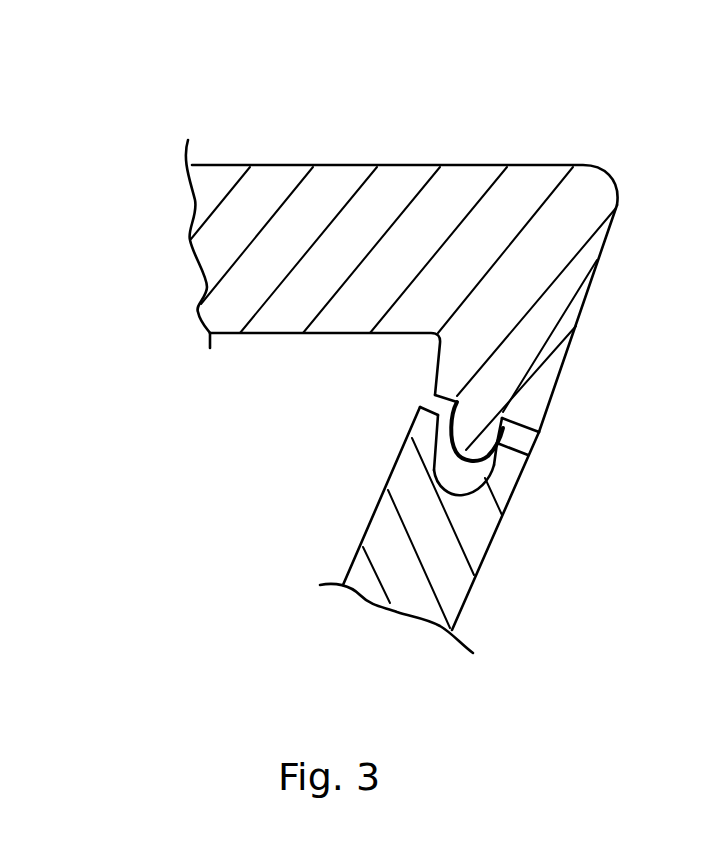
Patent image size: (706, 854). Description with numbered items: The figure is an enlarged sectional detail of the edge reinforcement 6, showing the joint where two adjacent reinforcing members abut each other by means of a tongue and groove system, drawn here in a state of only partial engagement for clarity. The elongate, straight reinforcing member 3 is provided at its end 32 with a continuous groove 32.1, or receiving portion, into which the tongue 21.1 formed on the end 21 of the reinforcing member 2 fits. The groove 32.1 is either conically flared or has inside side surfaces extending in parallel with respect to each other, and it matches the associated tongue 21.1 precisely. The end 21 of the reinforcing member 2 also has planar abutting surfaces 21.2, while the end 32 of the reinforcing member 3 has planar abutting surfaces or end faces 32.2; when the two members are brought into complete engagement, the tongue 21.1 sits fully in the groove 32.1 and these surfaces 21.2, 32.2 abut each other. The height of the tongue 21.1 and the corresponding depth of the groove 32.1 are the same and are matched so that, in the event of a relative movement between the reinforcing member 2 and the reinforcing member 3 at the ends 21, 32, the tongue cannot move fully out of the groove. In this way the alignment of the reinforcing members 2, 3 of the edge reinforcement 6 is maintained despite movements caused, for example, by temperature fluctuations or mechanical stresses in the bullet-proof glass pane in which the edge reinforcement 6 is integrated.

The reinforcing member 2 is at (329, 182).
The edge reinforcement 6 is at (500, 130).
The end of the reinforcing member 21 is at (553, 322).
The tongue 21.1 is at (470, 421).
The planar abutting surfaces 21.2 is at (422, 398).
The reinforcing member 3 is at (450, 582).
The end of the reinforcing member 32 is at (384, 528).
The groove 32.1 is at (470, 470).
The planar abutting surfaces or end faces 32.2 is at (531, 443).